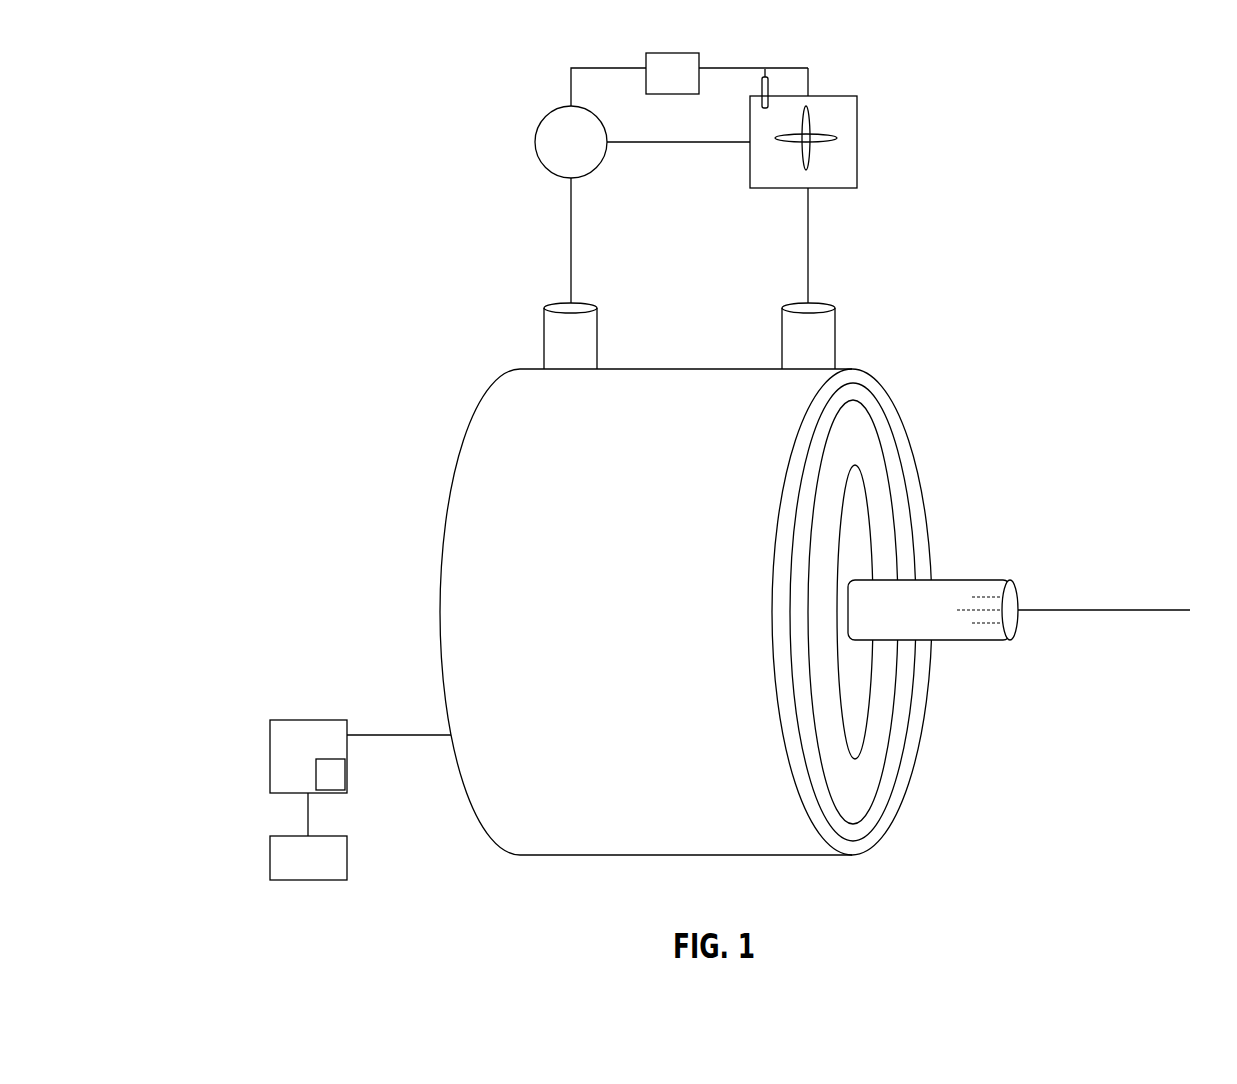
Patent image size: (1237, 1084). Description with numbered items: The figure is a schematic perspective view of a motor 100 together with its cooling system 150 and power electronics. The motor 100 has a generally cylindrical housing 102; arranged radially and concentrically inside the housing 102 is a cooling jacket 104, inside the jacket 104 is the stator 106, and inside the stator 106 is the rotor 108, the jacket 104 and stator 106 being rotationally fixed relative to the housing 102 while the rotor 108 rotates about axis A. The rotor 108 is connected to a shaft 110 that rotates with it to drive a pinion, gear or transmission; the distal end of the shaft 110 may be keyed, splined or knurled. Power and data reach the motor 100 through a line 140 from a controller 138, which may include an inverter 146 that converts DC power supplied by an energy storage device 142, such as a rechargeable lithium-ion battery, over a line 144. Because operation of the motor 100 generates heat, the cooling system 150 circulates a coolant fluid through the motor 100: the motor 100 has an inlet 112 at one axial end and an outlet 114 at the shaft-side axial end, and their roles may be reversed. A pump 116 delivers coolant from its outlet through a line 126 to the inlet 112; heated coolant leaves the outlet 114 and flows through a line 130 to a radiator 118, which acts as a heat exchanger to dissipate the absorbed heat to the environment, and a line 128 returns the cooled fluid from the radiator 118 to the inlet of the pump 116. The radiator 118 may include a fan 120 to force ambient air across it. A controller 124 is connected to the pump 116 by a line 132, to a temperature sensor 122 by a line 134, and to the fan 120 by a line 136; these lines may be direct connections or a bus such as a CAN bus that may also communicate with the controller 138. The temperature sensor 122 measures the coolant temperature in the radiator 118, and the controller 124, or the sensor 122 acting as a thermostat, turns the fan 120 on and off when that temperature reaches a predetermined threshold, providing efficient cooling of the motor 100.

The motor 100 is at (379, 410).
The housing 102 is at (487, 600).
The cooling jacket 104 is at (885, 433).
The stator 106 is at (853, 422).
The rotor 108 is at (858, 550).
The shaft 110 is at (1012, 595).
The inlet 112 is at (555, 338).
The outlet 114 is at (827, 338).
The pump 116 is at (550, 140).
The radiator 118 is at (843, 115).
The fan 120 is at (817, 145).
The temperature sensor 122 is at (760, 80).
The controller 124 is at (678, 97).
The line 126 is at (570, 232).
The line 128 is at (678, 143).
The line 130 is at (808, 232).
The line 132 is at (570, 88).
The line 134 is at (718, 63).
The line 136 is at (808, 85).
The controller 138 is at (270, 755).
The line 140 is at (405, 735).
The energy storage device 142 is at (270, 855).
The line 144 is at (305, 822).
The inverter 146 is at (335, 775).
The cooling system 150 is at (1006, 76).